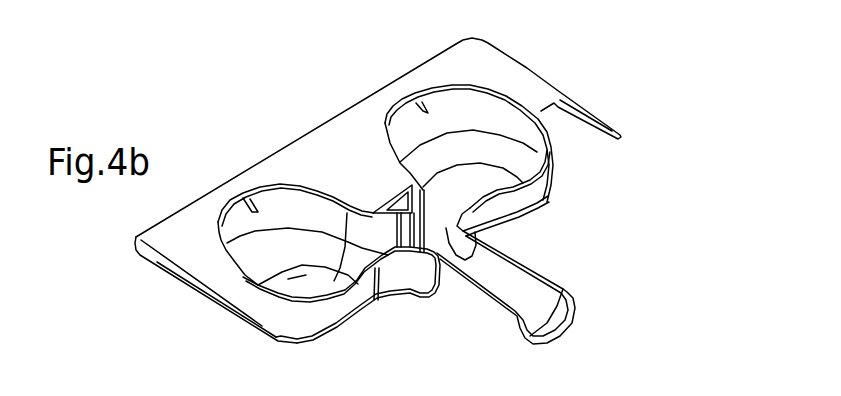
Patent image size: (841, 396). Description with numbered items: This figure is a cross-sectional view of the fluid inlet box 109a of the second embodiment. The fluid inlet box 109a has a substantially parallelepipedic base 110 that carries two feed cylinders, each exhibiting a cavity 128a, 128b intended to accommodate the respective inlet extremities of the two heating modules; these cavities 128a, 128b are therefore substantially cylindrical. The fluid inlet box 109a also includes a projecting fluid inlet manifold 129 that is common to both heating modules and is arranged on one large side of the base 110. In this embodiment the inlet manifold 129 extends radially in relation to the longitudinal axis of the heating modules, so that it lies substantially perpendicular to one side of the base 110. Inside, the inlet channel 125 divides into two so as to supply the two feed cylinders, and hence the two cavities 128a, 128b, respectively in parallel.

The fluid inlet box 109a is at (321, 123).
The base 110 is at (205, 269).
The inlet channel 125 is at (583, 338).
The cavity 128a is at (329, 290).
The cavity 128b is at (508, 118).
The fluid inlet manifold 129 is at (560, 293).